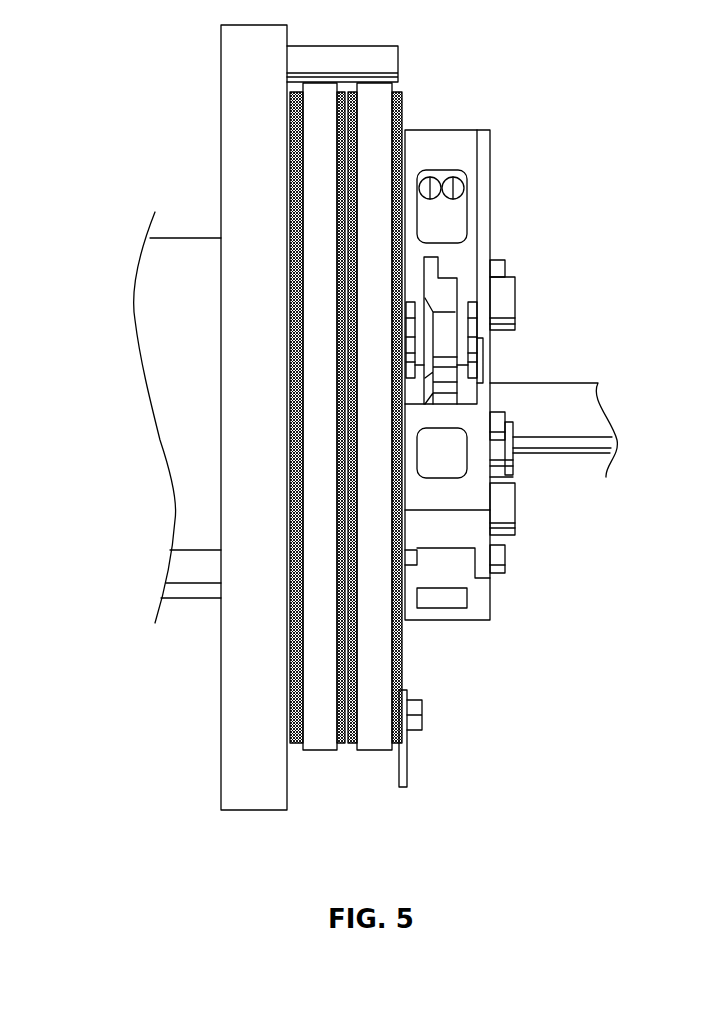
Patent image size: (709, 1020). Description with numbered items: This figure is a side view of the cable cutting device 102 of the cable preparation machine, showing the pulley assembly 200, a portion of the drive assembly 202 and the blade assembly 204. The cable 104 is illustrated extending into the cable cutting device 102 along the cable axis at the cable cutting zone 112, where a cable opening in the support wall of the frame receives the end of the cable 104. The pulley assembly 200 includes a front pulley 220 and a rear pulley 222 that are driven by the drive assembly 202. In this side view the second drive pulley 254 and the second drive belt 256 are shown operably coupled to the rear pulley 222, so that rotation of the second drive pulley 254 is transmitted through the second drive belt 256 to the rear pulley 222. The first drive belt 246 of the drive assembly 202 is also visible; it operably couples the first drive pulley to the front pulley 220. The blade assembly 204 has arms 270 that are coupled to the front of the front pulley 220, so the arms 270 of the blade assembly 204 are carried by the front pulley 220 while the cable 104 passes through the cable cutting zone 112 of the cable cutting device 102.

The cable cutting device 102 is at (516, 106).
The cable 104 is at (580, 382).
The cable cutting zone 112 is at (496, 375).
The pulley assembly 200 is at (404, 99).
The drive assembly 202 is at (191, 604).
The blade assembly 204 is at (450, 125).
The front pulley 220 is at (402, 713).
The rear pulley 222 is at (295, 748).
The first drive belt 246 is at (373, 670).
The second drive pulley 254 is at (286, 458).
The second drive belt 256 is at (320, 727).
The arms 270 is at (456, 258).